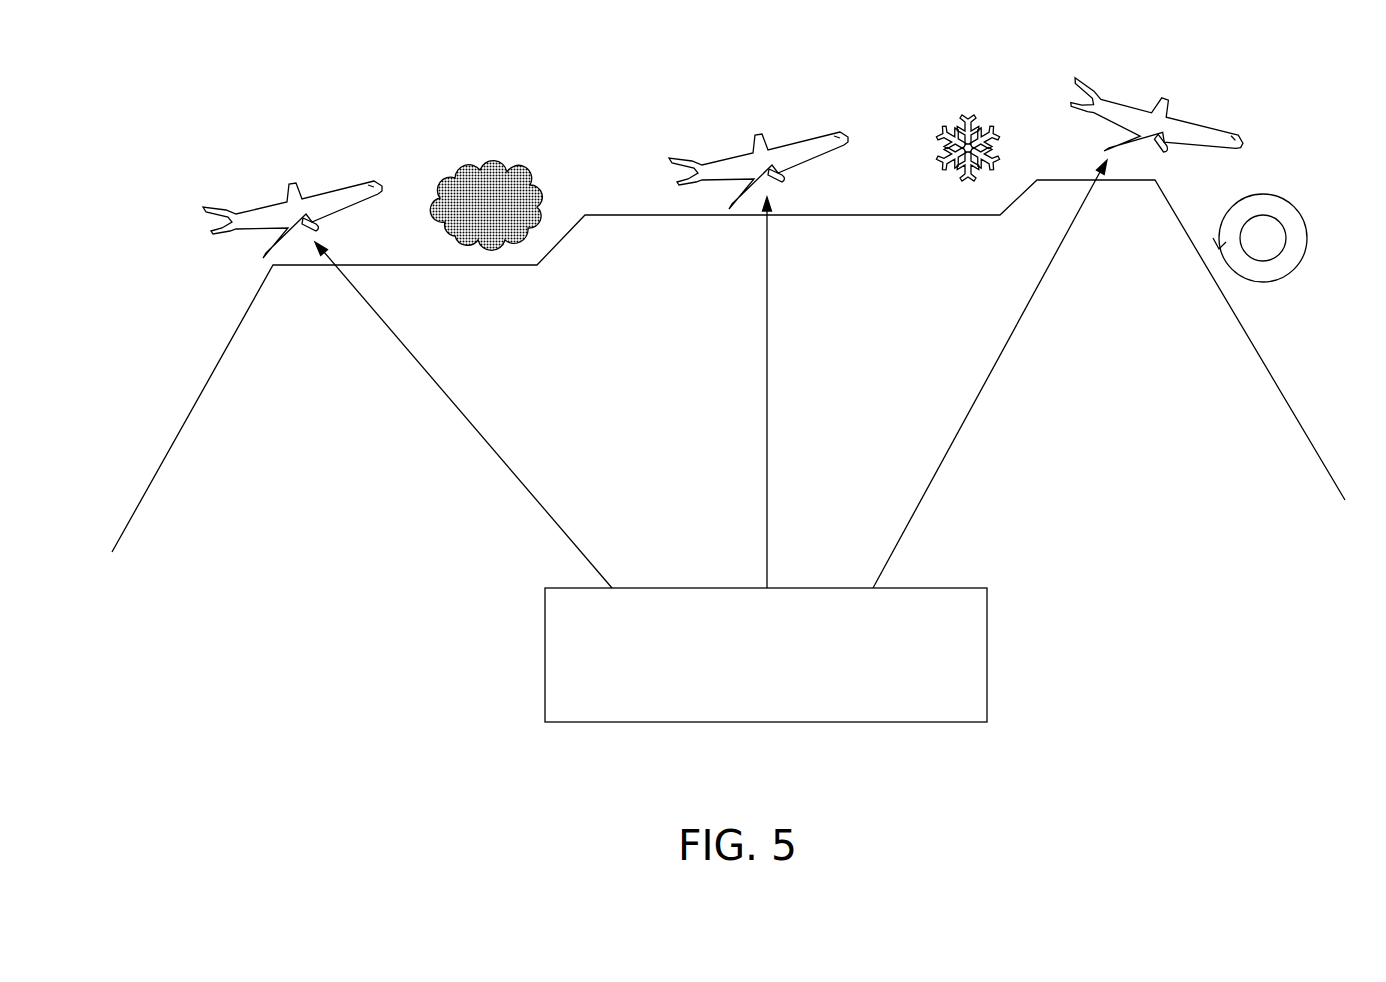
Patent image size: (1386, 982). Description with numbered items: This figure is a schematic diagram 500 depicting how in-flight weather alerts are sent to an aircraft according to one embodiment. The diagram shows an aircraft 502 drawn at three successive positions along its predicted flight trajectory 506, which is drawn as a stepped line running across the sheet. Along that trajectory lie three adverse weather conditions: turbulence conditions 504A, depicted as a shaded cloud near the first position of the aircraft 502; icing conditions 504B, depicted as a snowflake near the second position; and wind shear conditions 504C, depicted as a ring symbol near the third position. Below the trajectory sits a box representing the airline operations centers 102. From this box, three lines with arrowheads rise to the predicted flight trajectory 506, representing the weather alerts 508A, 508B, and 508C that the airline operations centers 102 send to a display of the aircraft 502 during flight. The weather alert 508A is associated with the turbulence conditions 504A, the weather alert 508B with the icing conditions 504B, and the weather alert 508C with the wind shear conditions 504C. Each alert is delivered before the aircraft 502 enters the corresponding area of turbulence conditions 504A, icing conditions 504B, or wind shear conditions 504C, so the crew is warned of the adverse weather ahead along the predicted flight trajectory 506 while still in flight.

The schematic diagram 500 is at (886, 776).
The aircraft 502 is at (332, 184).
The turbulence conditions 504A is at (505, 172).
The icing conditions 504B is at (975, 118).
The wind shear conditions 504C is at (1272, 194).
The predicted flight trajectory 506 is at (172, 447).
The weather alert 508A is at (467, 420).
The weather alert 508B is at (767, 345).
The weather alert 508C is at (947, 452).
The airline operations centers 102 is at (766, 655).